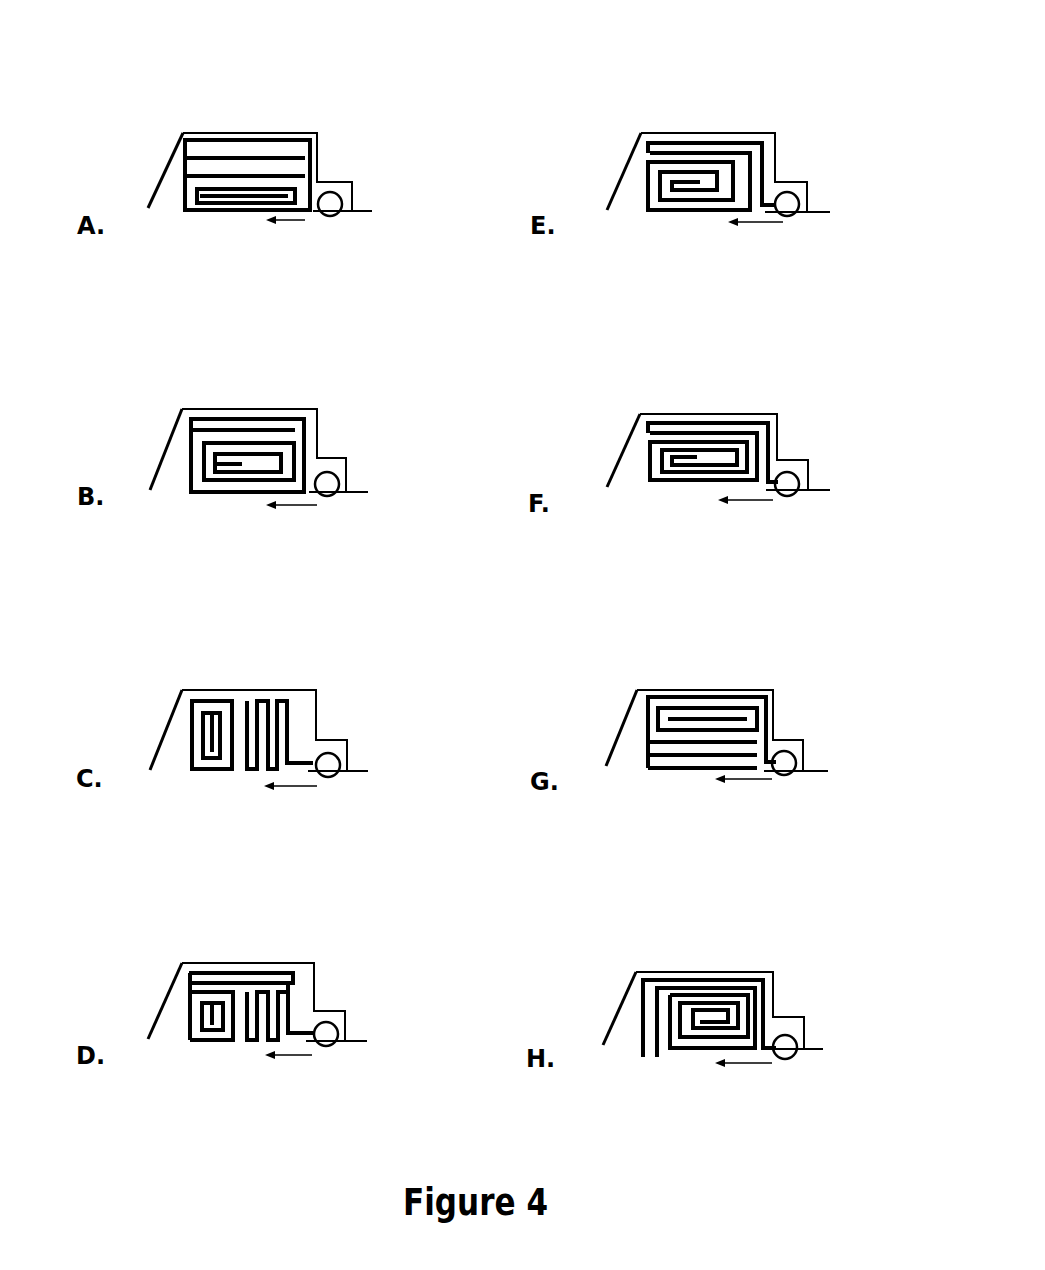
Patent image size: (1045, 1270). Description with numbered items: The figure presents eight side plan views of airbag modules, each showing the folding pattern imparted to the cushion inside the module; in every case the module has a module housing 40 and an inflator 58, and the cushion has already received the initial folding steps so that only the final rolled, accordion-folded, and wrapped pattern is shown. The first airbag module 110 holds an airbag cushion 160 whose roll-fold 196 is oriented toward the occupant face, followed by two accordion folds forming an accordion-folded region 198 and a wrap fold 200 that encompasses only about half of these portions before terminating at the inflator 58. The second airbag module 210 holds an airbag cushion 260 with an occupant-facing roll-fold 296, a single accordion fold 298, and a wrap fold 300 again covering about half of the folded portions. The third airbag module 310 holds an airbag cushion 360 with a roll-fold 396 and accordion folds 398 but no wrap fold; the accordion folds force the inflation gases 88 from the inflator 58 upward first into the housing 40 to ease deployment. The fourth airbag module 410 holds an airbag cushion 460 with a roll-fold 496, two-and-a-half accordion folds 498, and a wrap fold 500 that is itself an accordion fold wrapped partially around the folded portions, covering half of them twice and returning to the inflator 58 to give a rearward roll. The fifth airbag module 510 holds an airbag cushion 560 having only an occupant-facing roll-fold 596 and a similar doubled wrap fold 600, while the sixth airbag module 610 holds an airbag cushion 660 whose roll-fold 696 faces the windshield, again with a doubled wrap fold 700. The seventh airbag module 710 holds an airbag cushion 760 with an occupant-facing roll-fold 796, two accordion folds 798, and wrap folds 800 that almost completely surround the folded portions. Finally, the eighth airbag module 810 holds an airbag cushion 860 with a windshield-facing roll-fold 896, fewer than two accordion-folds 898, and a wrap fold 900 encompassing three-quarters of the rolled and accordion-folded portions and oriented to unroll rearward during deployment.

In FIG. 4A, the module housing 40 is at (158, 185).
In FIG. 4B, the module housing 40 is at (162, 466).
In FIG. 4C, the module housing 40 is at (162, 742).
In FIG. 4D, the module housing 40 is at (160, 1013).
In FIG. 4E, the module housing 40 is at (620, 178).
In FIG. 4F, the module housing 40 is at (619, 457).
In FIG. 4G, the module housing 40 is at (614, 746).
In FIG. 4H, the module housing 40 is at (614, 1018).
In FIG. 4A, the inflator 58 is at (335, 205).
In FIG. 4B, the inflator 58 is at (333, 486).
In FIG. 4C, the inflator 58 is at (333, 766).
In FIG. 4D, the inflator 58 is at (333, 1035).
In FIG. 4E, the inflator 58 is at (790, 203).
In FIG. 4F, the inflator 58 is at (790, 481).
In FIG. 4G, the inflator 58 is at (788, 763).
In FIG. 4H, the inflator 58 is at (790, 1043).
In FIG. 4A, the inflation gases 88 is at (302, 222).
In FIG. 4B, the inflation gases 88 is at (298, 506).
In FIG. 4C, the inflation gases 88 is at (300, 787).
In FIG. 4D, the inflation gases 88 is at (292, 1057).
In FIG. 4E, the inflation gases 88 is at (765, 223).
In FIG. 4F, the inflation gases 88 is at (749, 502).
In FIG. 4G, the inflation gases 88 is at (744, 781).
In FIG. 4H, the inflation gases 88 is at (746, 1065).
In FIG. 4A, the airbag module 110 is at (242, 157).
In FIG. 4A, the airbag cushion 160 is at (380, 100).
In FIG. 4A, the roll-fold 196 is at (245, 200).
In FIG. 4A, the accordion-folded region 198 is at (186, 160).
In FIG. 4A, the wrap fold 200 is at (222, 140).
In FIG. 4B, the airbag module 210 is at (238, 438).
In FIG. 4B, the airbag cushion 260 is at (370, 378).
In FIG. 4B, the roll-fold 296 is at (242, 468).
In FIG. 4B, the accordion fold 298 is at (190, 432).
In FIG. 4B, the wrap fold 300 is at (236, 418).
In FIG. 4C, the airbag module 310 is at (239, 718).
In FIG. 4C, the airbag cushion 360 is at (378, 656).
In FIG. 4C, the roll-fold 396 is at (212, 744).
In FIG. 4C, the accordion folds 398 is at (258, 764).
In FIG. 4D, the airbag module 410 is at (225, 1002).
In FIG. 4D, the airbag cushion 460 is at (362, 966).
In FIG. 4D, the roll-fold 496 is at (200, 1027).
In FIG. 4D, the accordion folds 498 is at (247, 1042).
In FIG. 4D, the wrap fold 500 is at (212, 973).
In FIG. 4E, the airbag module 510 is at (748, 158).
In FIG. 4E, the airbag cushion 560 is at (835, 88).
In FIG. 4E, the roll-fold 596 is at (697, 190).
In FIG. 4E, the wrap fold 600 is at (762, 168).
In FIG. 4F, the airbag module 610 is at (750, 429).
In FIG. 4F, the airbag cushion 660 is at (838, 407).
In FIG. 4F, the roll-fold 696 is at (695, 462).
In FIG. 4F, the wrap fold 700 is at (772, 429).
In FIG. 4G, the airbag module 710 is at (677, 717).
In FIG. 4G, the airbag cushion 760 is at (830, 683).
In FIG. 4G, the roll-fold 796 is at (688, 716).
In FIG. 4G, the accordion folds 798 is at (683, 747).
In FIG. 4G, the wrap folds 800 is at (648, 742).
In FIG. 4H, the airbag module 810 is at (689, 1003).
In FIG. 4H, the airbag cushion 860 is at (835, 972).
In FIG. 4H, the roll-fold 896 is at (705, 1028).
In FIG. 4H, the accordion-folds 898 is at (662, 1058).
In FIG. 4H, the wrap fold 900 is at (642, 1016).